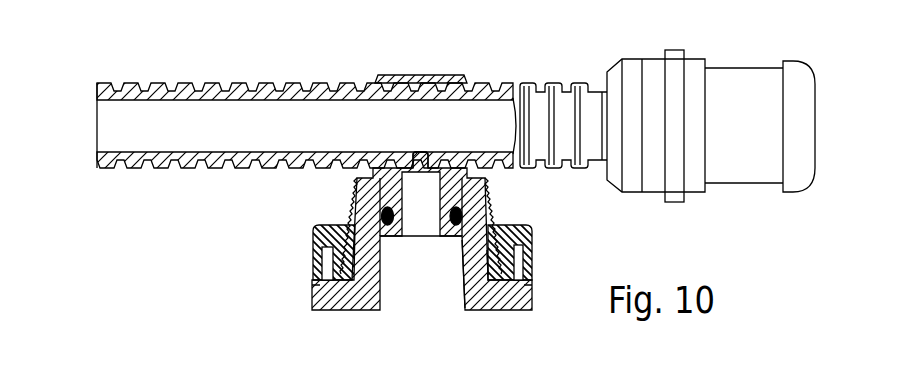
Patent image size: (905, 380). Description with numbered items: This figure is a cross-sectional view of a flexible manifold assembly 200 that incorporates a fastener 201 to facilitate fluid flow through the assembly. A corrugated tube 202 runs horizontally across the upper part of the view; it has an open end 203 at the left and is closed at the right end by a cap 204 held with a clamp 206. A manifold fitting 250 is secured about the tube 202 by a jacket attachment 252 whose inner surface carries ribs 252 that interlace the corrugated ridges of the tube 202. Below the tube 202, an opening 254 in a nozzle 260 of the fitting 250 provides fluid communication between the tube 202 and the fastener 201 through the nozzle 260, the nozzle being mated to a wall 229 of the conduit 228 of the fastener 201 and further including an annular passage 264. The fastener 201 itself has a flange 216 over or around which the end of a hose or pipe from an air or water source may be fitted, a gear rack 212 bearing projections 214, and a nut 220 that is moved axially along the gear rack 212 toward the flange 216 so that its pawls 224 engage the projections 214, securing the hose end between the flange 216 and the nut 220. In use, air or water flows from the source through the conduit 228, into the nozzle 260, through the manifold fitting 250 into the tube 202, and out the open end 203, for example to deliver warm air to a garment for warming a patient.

The flexible manifold assembly 200 is at (280, 46).
The fastener 201 is at (273, 173).
The corrugated tube 202 is at (357, 188).
The open end 203 is at (103, 127).
The cap 204 is at (798, 70).
The clamp 206 is at (677, 50).
The gear rack 212 is at (355, 212).
The projections 214 is at (486, 202).
The flange 216 is at (525, 294).
The nut 220 is at (520, 242).
The pawls 224 is at (489, 262).
The conduit 228 is at (403, 290).
The wall 229 is at (463, 288).
The manifold fitting 250 is at (465, 77).
The jacket attachment 252 is at (410, 86).
The opening 254 is at (421, 154).
The nozzle 260 is at (467, 172).
The annular passage 264 is at (430, 222).